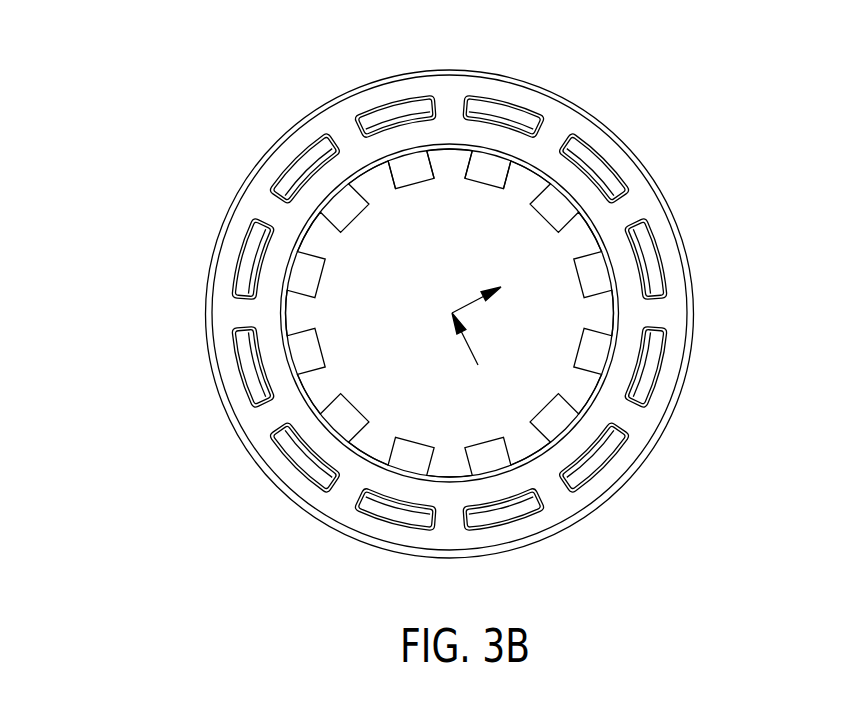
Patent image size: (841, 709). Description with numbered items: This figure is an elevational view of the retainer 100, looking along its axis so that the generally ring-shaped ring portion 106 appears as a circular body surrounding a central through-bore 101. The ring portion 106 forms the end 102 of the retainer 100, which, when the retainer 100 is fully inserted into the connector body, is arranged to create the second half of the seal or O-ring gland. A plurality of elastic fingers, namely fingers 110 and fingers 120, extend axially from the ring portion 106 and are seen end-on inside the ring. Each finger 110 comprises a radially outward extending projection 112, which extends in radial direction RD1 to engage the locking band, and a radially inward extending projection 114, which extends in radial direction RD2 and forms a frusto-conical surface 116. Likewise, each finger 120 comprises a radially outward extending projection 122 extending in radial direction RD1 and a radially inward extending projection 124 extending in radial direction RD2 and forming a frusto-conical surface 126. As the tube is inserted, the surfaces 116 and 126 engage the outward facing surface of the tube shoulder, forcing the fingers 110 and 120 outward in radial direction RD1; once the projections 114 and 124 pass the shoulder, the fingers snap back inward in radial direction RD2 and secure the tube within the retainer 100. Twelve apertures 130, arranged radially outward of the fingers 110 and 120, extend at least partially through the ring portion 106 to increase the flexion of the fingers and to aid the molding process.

The retainer 100 is at (113, 125).
The through-bore 101 is at (405, 362).
The end 102 is at (663, 315).
The ring portion 106 is at (668, 378).
The fingers 110 is at (373, 117).
The radially outward extending projection 112 is at (407, 107).
The radially inward extending projection 114 is at (401, 172).
The surfaces 116 is at (412, 177).
The fingers 120 is at (517, 122).
The radially outward extending projection 122 is at (502, 110).
The radially inward extending projection 124 is at (483, 175).
The surfaces 126 is at (493, 178).
The apertures 130 is at (668, 262).
The radial direction RD1 is at (479, 303).
The radial direction RD2 is at (467, 343).